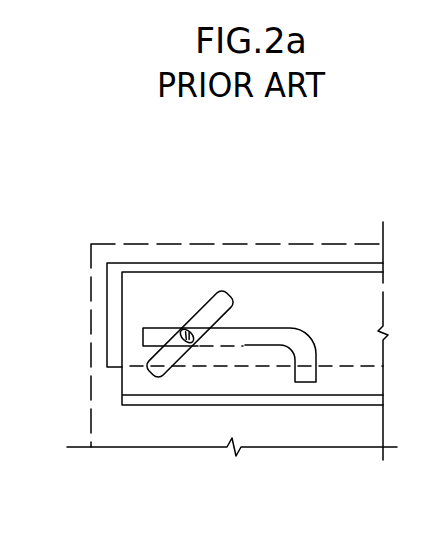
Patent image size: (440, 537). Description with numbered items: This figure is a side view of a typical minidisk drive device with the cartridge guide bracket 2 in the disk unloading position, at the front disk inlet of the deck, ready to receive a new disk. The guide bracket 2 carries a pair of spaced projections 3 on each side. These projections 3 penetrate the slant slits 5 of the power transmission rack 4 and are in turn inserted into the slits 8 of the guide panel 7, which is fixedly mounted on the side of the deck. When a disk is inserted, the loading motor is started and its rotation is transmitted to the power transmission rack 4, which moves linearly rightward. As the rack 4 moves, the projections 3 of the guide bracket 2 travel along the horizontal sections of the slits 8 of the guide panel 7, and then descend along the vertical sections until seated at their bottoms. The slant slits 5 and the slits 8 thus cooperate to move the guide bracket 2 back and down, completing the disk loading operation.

The cartridge guide bracket 2 is at (110, 340).
The projections 3 is at (187, 331).
The power transmission rack 4 is at (343, 388).
The slant slits 5 is at (153, 350).
The guide panel 7 is at (287, 249).
The slits 8 is at (254, 346).